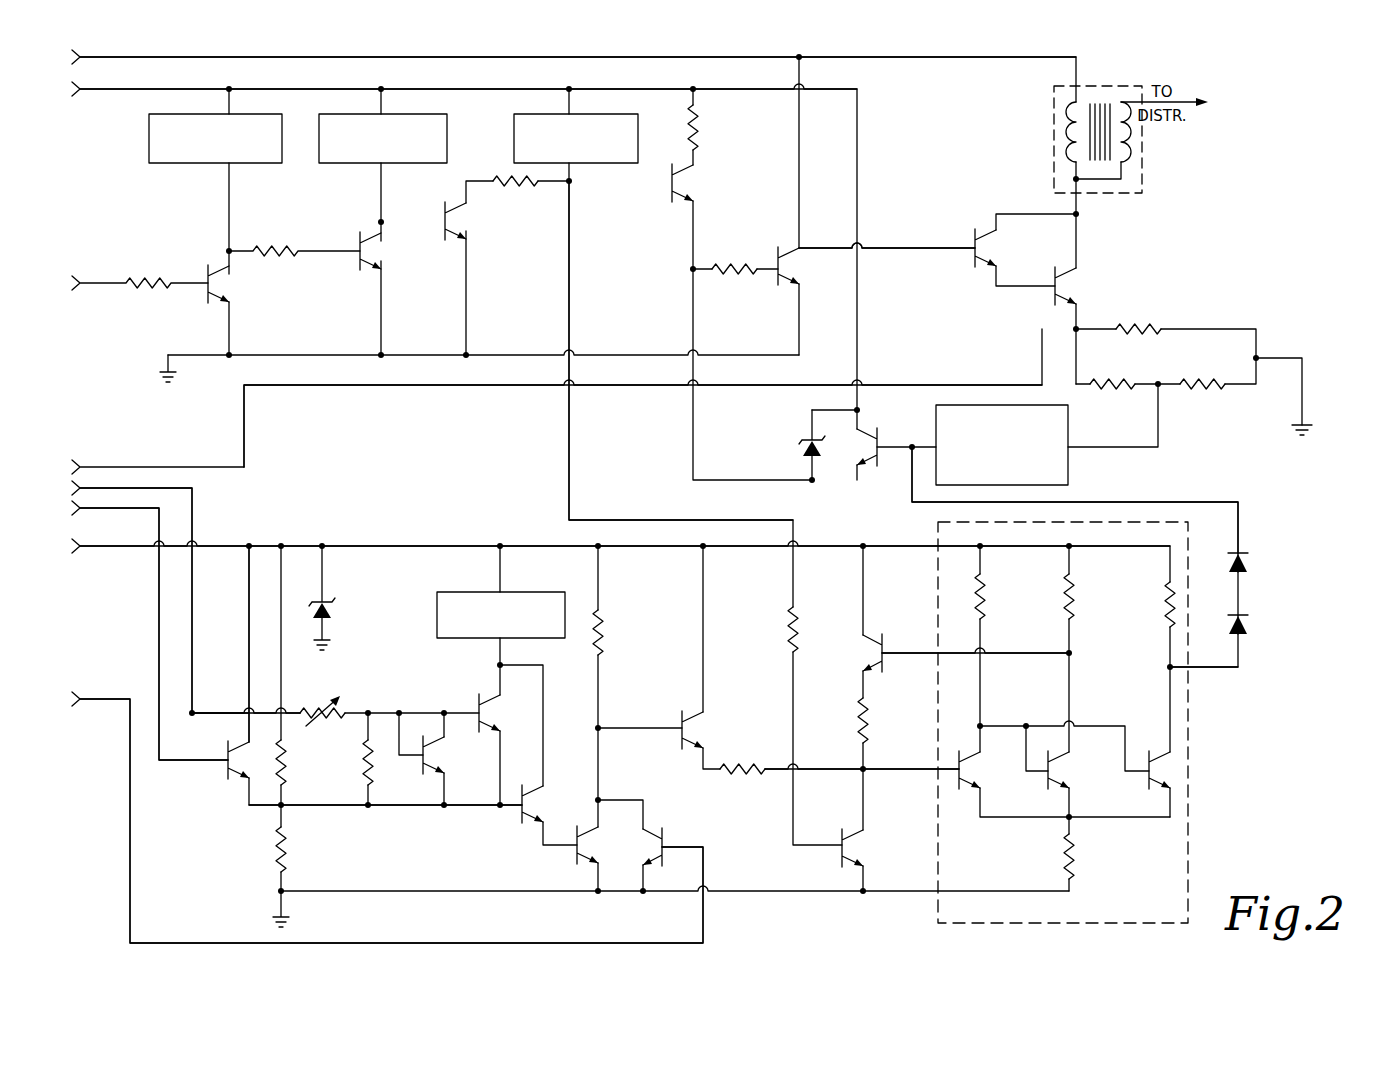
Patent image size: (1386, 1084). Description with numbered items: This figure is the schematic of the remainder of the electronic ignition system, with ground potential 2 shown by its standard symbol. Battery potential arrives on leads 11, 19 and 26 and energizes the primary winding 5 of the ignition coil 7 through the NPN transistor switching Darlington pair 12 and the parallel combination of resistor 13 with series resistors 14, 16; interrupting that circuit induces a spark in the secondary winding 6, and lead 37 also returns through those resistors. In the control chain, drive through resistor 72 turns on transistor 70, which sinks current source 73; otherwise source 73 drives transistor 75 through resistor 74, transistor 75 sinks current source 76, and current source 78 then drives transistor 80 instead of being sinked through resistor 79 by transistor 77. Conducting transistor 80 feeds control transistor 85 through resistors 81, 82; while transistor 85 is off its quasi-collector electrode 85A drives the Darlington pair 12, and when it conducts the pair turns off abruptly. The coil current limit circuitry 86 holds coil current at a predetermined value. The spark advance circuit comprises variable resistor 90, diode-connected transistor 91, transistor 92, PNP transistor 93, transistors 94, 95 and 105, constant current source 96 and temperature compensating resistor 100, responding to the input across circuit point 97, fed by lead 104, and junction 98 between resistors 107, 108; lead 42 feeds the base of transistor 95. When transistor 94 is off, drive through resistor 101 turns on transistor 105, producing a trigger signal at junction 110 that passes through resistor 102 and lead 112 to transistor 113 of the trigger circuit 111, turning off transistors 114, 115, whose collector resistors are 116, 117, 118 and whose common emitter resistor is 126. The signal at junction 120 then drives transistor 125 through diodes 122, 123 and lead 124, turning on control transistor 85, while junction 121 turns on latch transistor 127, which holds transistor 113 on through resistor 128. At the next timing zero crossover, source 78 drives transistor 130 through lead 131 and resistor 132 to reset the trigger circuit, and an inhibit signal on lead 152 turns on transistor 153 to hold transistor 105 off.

The point of reference or ground potential 2 is at (160, 376).
The primary winding 5 is at (1066, 142).
The secondary winding 6 is at (1131, 142).
The ignition coil 7 is at (1138, 196).
The positive polarity potential lead 11 is at (262, 60).
The NPN transistor switching Darlington pair 12 is at (1030, 252).
The resistor 13 is at (1145, 324).
The resistor 14 is at (1112, 379).
The resistor 16 is at (1200, 379).
The positive polarity potential lead 19 is at (178, 89).
The positive polarity potential lead 26 is at (238, 546).
The lead 37 is at (246, 423).
The lead 42 is at (82, 512).
The NPN transistor 70 is at (222, 286).
The resistor 72 is at (152, 283).
The current source 73 is at (192, 162).
The resistor 74 is at (282, 246).
The NPN transistor 75 is at (376, 255).
The current source 76 is at (352, 163).
The NPN transistor 77 is at (455, 224).
The current source 78 is at (514, 130).
The resistor 79 is at (516, 186).
The NPN transistor 80 is at (684, 183).
The resistor 81 is at (700, 126).
The resistor 82 is at (735, 264).
The control transistor 85 is at (786, 276).
The quasi-collector electrode 85A is at (795, 250).
The coil current limit circuitry 86 is at (1060, 468).
The variable resistor 90 is at (318, 702).
The NPN transistor connected as a diode 91 is at (432, 760).
The NPN transistor 92 is at (486, 716).
The PNP transistor 93 is at (532, 808).
The NPN transistor 94 is at (588, 850).
The NPN transistor 95 is at (222, 772).
The constant current source 96 is at (436, 604).
The circuit point 97 is at (194, 710).
The junction 98 is at (278, 808).
The temperature compensating resistor 100 is at (372, 770).
The resistor 101 is at (604, 630).
The resistor 102 is at (740, 775).
The lead 104 is at (194, 508).
The NPN transistor 105 is at (694, 735).
The resistor 107 is at (286, 763).
The resistor 108 is at (286, 858).
The output junction 110 is at (864, 771).
The trigger circuit 111 is at (926, 896).
The lead 112 is at (905, 769).
The NPN transistor 113 is at (970, 782).
The NPN transistor 114 is at (1058, 773).
The NPN transistor 115 is at (1160, 770).
The resistor 116 is at (984, 596).
The resistor 117 is at (1062, 604).
The resistor 118 is at (1165, 600).
The junction 120 is at (1170, 670).
The junction 121 is at (1072, 653).
The diode 122 is at (1246, 622).
The diode 123 is at (1246, 560).
The lead 124 is at (1240, 520).
The NPN transistor 125 is at (871, 462).
The common emitter resistor 126 is at (1074, 856).
The NPN transistor 127 is at (868, 660).
The resistor 128 is at (868, 716).
The NPN transistor 130 is at (852, 848).
The lead 131 is at (572, 425).
The resistor 132 is at (788, 628).
The lead 152 is at (130, 832).
The NPN transistor 153 is at (670, 828).